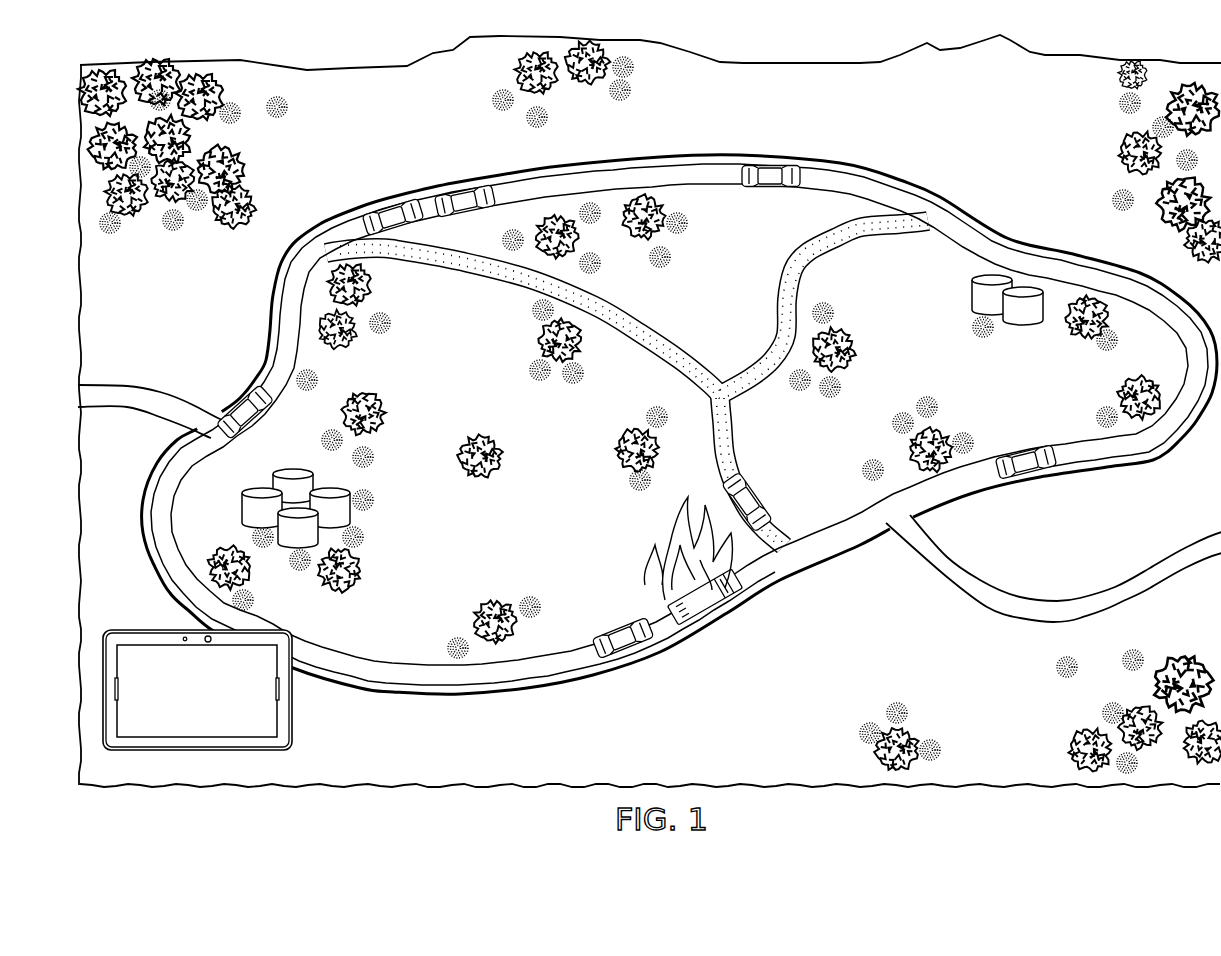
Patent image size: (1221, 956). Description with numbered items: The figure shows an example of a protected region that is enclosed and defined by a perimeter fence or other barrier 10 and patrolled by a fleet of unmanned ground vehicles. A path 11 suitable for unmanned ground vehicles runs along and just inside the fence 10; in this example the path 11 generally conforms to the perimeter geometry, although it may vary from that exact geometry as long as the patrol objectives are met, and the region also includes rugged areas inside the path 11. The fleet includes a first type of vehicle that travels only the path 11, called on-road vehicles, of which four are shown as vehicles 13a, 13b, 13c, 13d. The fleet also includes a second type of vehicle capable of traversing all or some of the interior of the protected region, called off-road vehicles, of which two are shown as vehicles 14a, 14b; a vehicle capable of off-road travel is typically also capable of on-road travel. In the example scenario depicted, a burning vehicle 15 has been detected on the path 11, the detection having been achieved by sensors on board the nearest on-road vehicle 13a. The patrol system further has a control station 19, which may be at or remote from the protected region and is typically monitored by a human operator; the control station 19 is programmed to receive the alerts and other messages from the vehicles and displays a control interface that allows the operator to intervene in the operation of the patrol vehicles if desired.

The perimeter fence 10 is at (394, 697).
The path 11 is at (430, 666).
The on-road vehicle 13a is at (620, 663).
The on-road vehicle 13b is at (773, 167).
The on-road vehicle 13c is at (243, 397).
The on-road vehicle 13d is at (1030, 480).
The off-road vehicle 14a is at (388, 207).
The off-road vehicle 14b is at (757, 493).
The burning vehicle 15 is at (698, 602).
The control station 19 is at (259, 704).